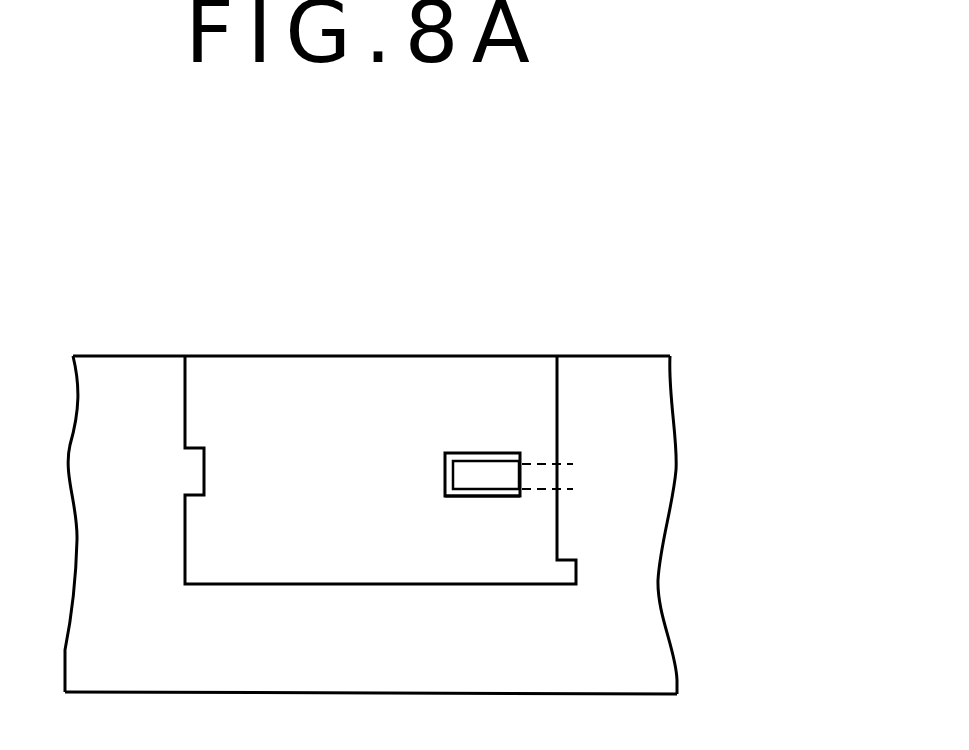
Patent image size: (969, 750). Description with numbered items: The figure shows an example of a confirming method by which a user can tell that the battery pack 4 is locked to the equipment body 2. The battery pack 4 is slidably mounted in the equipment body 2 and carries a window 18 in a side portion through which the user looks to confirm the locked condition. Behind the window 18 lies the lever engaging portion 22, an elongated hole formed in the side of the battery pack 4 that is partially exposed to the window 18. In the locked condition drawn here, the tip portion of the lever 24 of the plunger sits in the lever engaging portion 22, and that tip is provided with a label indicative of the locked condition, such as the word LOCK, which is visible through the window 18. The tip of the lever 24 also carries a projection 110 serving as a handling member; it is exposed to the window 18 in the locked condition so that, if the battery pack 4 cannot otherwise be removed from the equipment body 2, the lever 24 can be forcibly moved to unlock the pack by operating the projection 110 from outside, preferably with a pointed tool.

The equipment body 2 is at (613, 356).
The battery pack 4 is at (261, 356).
The projection 110 is at (462, 453).
The lever engaging portion 22 is at (490, 453).
The window 18 is at (465, 496).
The lever 24 is at (500, 496).